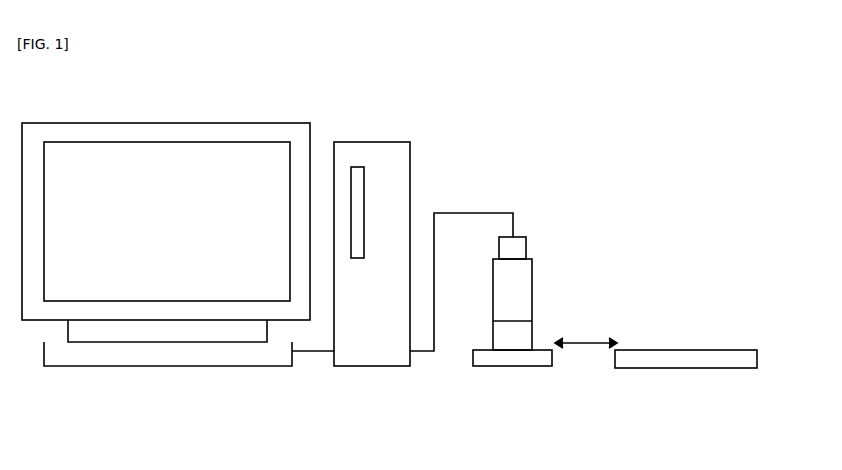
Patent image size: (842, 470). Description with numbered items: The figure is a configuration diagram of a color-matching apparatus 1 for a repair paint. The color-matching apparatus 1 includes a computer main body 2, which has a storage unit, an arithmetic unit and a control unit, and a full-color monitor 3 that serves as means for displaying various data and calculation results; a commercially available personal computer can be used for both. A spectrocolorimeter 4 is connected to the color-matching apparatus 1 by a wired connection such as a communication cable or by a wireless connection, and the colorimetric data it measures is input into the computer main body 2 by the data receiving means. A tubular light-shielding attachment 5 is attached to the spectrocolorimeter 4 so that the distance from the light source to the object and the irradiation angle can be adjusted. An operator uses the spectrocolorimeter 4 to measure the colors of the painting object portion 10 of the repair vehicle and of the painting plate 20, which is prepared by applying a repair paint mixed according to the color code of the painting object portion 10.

The color-matching apparatus 1 is at (425, 135).
The computer main body 2 is at (370, 160).
The full-color monitor 3 is at (167, 157).
The spectrocolorimeter 4 is at (525, 292).
The light-shielding attachment 5 is at (525, 337).
The painting object portion of repair vehicle 10 is at (690, 368).
The painting plate 20 is at (517, 366).